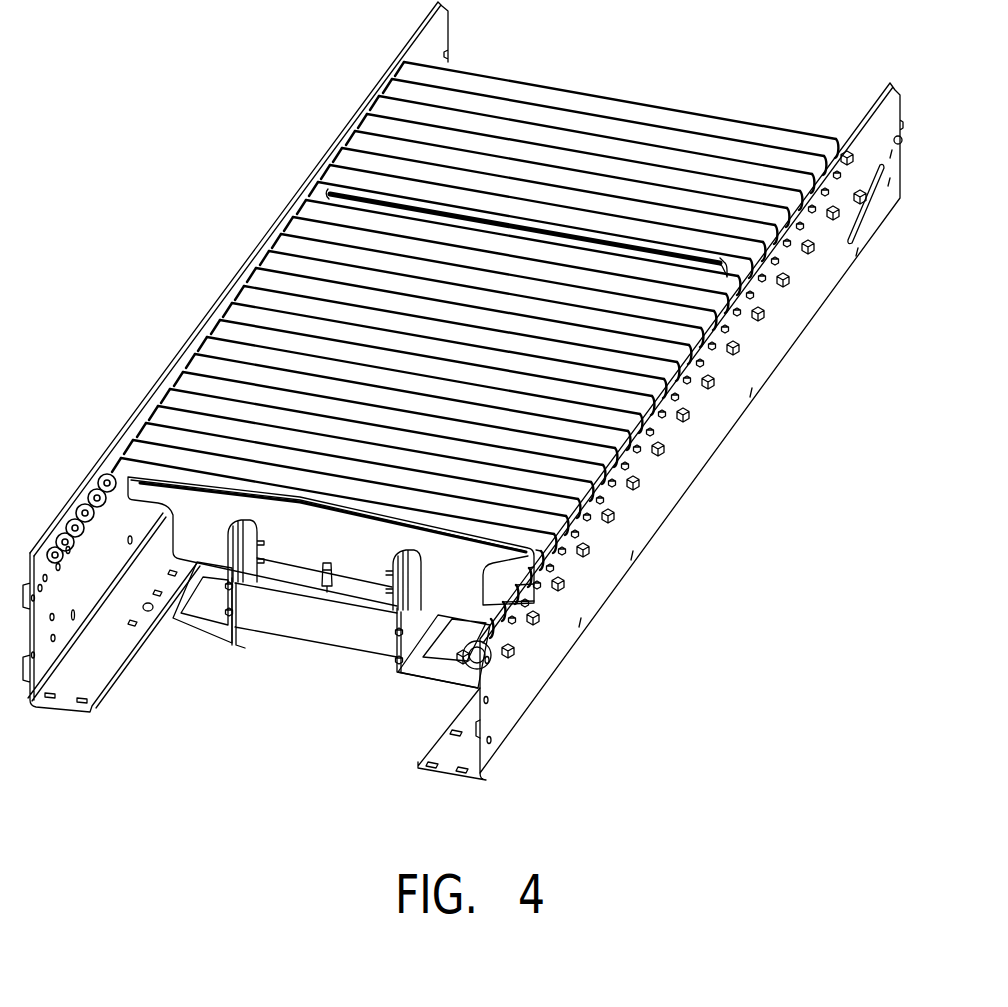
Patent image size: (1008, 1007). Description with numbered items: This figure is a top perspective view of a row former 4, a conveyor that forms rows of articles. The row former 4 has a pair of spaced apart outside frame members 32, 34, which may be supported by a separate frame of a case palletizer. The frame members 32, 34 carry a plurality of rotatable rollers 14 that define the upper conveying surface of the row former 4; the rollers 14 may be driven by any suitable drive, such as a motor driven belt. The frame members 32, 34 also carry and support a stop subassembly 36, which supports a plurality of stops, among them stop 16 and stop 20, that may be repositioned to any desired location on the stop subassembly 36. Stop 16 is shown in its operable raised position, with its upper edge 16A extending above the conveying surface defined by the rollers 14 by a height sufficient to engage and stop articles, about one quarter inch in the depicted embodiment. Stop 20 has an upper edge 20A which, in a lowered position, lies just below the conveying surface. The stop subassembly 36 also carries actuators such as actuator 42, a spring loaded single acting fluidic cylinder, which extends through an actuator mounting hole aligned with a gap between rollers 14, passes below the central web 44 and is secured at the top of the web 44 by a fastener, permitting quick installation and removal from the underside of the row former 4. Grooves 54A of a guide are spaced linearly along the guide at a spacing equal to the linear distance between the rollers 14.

The row former 4 is at (189, 117).
The rollers 14 is at (548, 170).
The stop 16 is at (333, 197).
The upper edge 16A is at (763, 240).
The outside frame member 32 is at (672, 477).
The outside frame member 34 is at (40, 622).
The stop 20 is at (298, 548).
The upper edge 20A is at (418, 532).
The grooves 54A is at (413, 546).
The actuator 42 is at (320, 580).
The central web 44 is at (357, 595).
The stop subassembly 36 is at (373, 638).